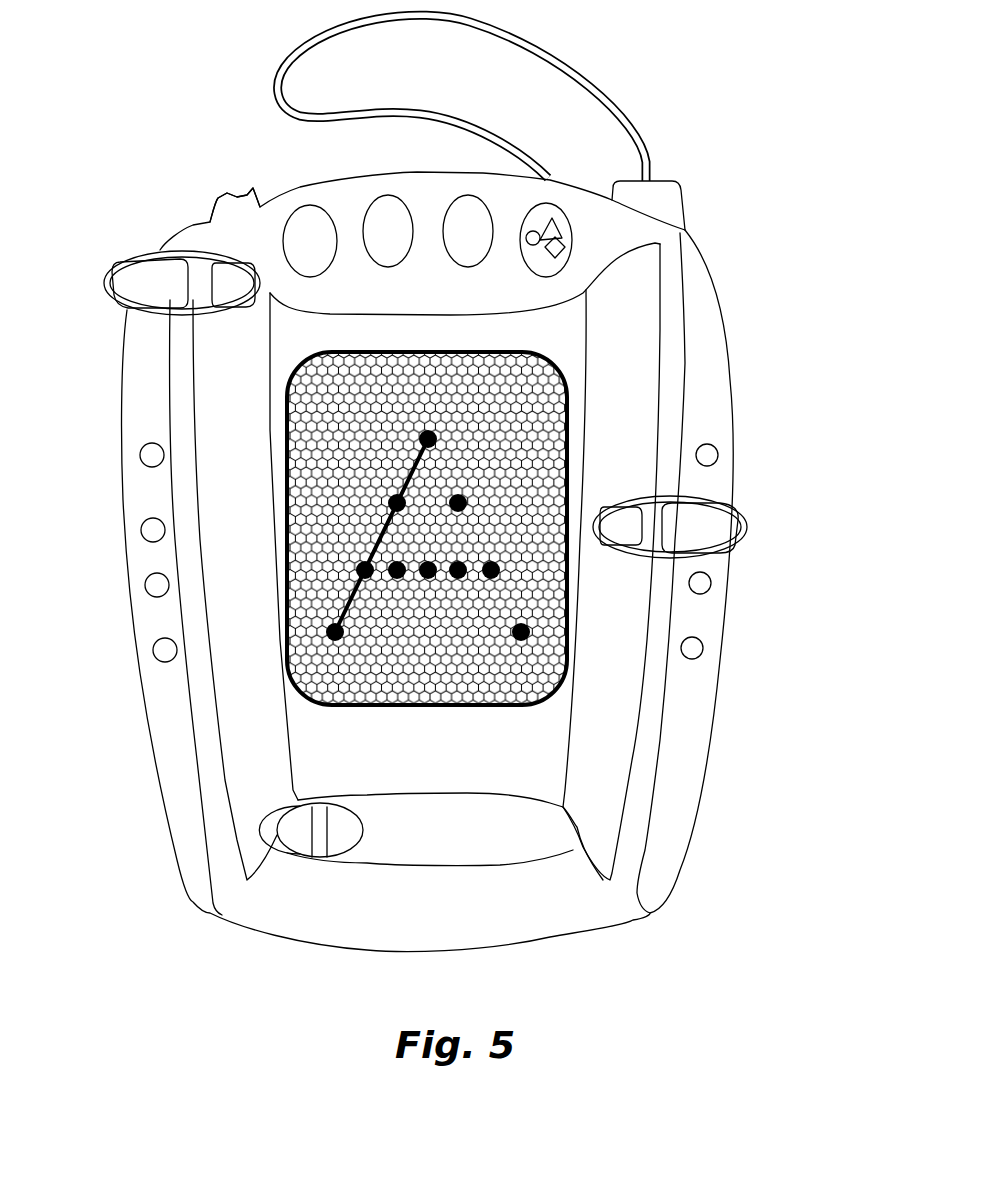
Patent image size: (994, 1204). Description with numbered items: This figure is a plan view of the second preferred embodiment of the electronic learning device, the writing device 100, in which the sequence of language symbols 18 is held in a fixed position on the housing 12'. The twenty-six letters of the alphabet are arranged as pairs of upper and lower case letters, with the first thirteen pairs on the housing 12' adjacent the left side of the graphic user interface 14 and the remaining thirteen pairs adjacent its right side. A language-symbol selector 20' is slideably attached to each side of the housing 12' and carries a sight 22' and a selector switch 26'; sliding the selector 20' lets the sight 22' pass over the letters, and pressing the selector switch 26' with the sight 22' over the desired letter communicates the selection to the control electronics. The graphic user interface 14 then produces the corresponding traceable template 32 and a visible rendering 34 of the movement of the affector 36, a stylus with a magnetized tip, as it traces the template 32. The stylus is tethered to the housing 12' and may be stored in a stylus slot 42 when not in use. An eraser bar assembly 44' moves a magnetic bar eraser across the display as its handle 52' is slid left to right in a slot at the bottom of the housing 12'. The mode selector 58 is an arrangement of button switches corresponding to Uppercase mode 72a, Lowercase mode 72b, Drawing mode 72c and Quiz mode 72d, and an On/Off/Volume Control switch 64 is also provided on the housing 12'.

The housing 12' is at (473, 574).
The graphic user interface 14 is at (560, 446).
The sequence of language symbols 18 is at (200, 478).
The language-symbol selector 20' is at (437, 389).
The sight 22' is at (446, 364).
The selector switch 26' is at (425, 427).
The traceable template 32 is at (520, 573).
The visible rendering 34 is at (337, 593).
The affector 36 is at (665, 198).
The stylus slot 42 is at (685, 230).
The eraser bar assembly 44' is at (396, 881).
The handle 52' is at (301, 899).
The mode selector 58 is at (371, 178).
The On/Off/Volume Control switch 64 is at (218, 195).
The Uppercase mode 72a is at (300, 212).
The Lowercase mode 72b is at (390, 203).
The Drawing mode 72c is at (557, 207).
The Quiz mode 72d is at (473, 202).
The writing device 100 is at (160, 868).